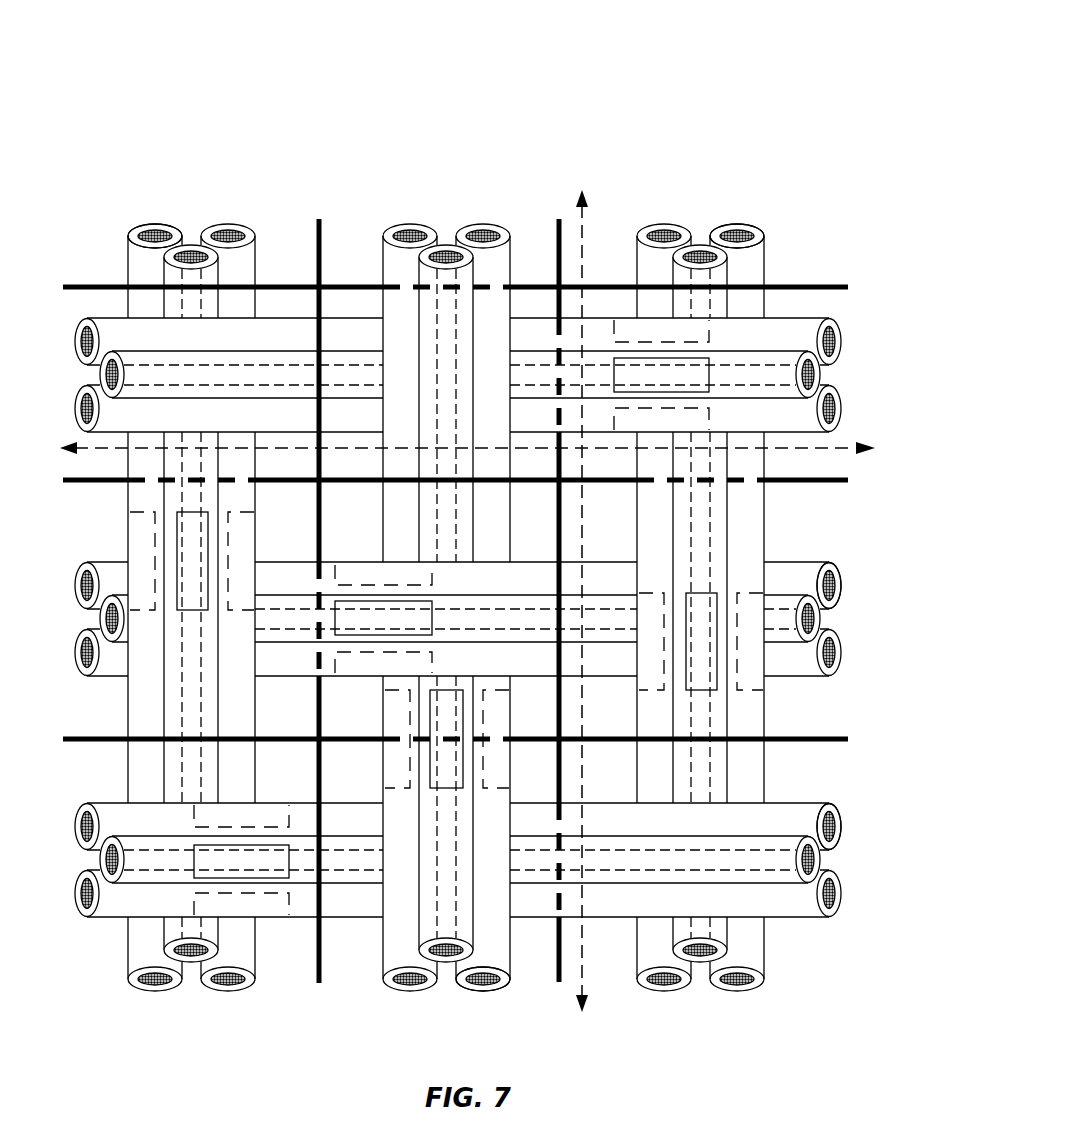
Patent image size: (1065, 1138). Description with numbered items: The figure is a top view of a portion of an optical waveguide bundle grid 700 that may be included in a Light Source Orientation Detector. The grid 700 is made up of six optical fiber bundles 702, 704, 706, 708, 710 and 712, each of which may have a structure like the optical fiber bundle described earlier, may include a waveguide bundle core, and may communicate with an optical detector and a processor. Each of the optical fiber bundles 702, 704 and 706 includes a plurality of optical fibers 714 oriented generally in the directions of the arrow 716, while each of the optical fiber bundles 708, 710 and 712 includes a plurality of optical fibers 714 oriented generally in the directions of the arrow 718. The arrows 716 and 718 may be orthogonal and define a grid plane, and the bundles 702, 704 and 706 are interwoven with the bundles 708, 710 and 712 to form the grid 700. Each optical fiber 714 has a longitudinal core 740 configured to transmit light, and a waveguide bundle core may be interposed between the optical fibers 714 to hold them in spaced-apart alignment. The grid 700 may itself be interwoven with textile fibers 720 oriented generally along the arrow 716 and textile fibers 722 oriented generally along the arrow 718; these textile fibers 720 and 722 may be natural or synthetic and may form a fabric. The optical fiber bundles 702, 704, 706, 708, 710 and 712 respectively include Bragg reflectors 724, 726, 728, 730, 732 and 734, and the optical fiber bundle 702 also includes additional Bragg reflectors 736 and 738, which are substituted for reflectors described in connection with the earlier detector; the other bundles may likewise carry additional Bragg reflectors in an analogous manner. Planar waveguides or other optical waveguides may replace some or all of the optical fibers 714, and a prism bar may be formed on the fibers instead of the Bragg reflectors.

The optical waveguide bundle grid 700 is at (662, 155).
The optical fiber bundle 702 is at (217, 203).
The optical fiber bundle 704 is at (464, 203).
The optical fiber bundle 706 is at (712, 203).
The optical fiber bundle 708 is at (853, 382).
The optical fiber bundle 710 is at (863, 612).
The optical fiber bundle 712 is at (865, 870).
The optical fibers 714 is at (155, 227).
The arrow 716 is at (583, 967).
The arrow 718 is at (842, 450).
The textile fibers 720 is at (318, 949).
The textile fibers 722 is at (812, 742).
The Bragg reflector 724 is at (192, 522).
The Bragg reflector 726 is at (443, 752).
The Bragg reflector 728 is at (700, 663).
The Bragg reflector 730 is at (682, 375).
The Bragg reflector 732 is at (390, 618).
The Bragg reflector 734 is at (243, 858).
The Bragg reflector 736 is at (145, 523).
The Bragg reflector 738 is at (243, 582).
The longitudinal core 740 is at (227, 232).